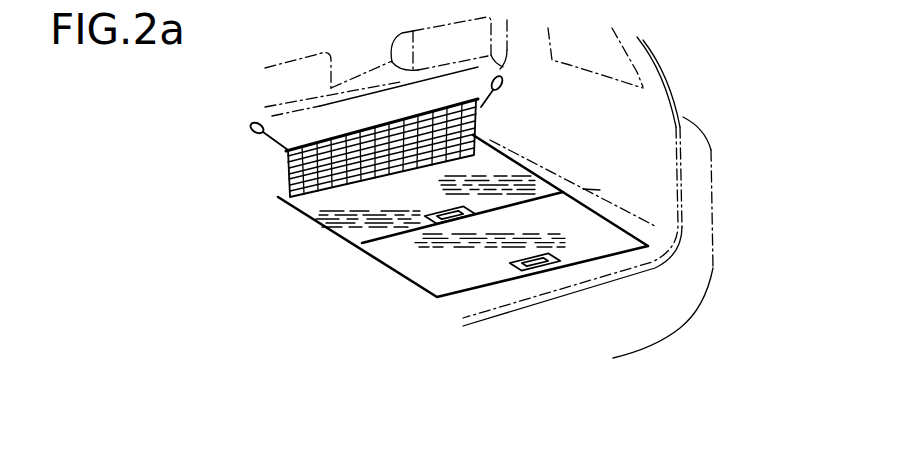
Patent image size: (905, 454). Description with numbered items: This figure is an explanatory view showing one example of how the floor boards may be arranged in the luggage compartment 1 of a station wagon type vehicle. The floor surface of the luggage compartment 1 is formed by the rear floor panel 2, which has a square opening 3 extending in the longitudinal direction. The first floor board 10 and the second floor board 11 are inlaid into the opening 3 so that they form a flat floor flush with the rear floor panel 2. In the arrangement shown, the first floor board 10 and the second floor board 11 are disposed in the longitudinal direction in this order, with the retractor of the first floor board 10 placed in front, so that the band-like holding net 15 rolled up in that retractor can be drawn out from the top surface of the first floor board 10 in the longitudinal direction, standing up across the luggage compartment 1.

The luggage compartment 1 is at (604, 173).
The rear floor panel 2 is at (653, 230).
The square opening 3 is at (451, 237).
The first floor board 10 is at (342, 220).
The second floor board 11 is at (433, 271).
The holding net 15 is at (292, 177).